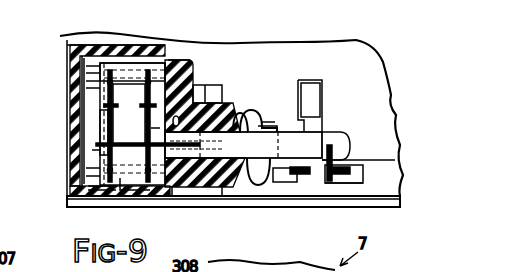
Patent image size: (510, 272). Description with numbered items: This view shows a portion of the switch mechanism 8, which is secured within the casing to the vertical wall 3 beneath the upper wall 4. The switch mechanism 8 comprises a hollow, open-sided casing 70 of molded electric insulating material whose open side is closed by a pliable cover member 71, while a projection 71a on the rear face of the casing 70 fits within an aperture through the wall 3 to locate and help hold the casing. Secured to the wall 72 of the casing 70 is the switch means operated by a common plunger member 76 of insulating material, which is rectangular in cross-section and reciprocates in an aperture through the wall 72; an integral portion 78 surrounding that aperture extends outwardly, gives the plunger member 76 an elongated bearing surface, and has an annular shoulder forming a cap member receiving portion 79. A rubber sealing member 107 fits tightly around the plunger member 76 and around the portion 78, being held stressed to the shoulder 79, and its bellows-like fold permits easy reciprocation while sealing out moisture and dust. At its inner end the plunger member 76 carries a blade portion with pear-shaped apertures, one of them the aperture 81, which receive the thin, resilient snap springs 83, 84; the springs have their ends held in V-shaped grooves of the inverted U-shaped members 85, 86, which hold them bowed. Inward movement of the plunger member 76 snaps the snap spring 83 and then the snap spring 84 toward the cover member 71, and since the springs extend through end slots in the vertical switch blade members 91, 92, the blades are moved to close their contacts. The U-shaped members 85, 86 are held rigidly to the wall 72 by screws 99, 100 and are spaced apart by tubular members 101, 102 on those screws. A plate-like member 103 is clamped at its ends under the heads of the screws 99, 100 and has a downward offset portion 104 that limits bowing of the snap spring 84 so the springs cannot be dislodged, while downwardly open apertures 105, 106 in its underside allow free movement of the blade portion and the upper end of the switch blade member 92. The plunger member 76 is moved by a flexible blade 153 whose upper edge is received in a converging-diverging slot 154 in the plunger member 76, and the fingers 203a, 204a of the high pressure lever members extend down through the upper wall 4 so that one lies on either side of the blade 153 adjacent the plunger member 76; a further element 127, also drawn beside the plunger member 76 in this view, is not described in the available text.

The vertical wall 3 is at (281, 207).
The upper wall 4 is at (336, 50).
The switch mechanism 8 is at (189, 52).
The casing 70 is at (172, 198).
The cover member 71 is at (133, 46).
The projection 71a is at (182, 205).
The wall 72 is at (193, 66).
The plunger member 76 is at (345, 140).
The portion 78 is at (205, 101).
The cap member receiving portion 79 is at (230, 117).
The pear-shaped aperture 81 is at (176, 121).
The snap spring 83 is at (151, 130).
The snap spring 84 is at (96, 144).
The U-shaped member 85 is at (141, 195).
The U-shaped member 86 is at (78, 197).
The switch blade member 91 is at (129, 114).
The switch blade member 92 is at (103, 107).
The screw 99 is at (88, 72).
The screw 100 is at (86, 170).
The tubular member 101 is at (124, 72).
The tubular member 102 is at (115, 192).
The plate-like member 103 is at (95, 90).
The offset portion 104 is at (98, 126).
The aperture 105 is at (99, 152).
The aperture 106 is at (99, 115).
The sealing member 107 is at (258, 124).
The bracket 127 is at (315, 94).
The flexible blade 153 is at (363, 178).
The slot 154 is at (325, 146).
The finger 203a is at (358, 165).
The finger 204a is at (243, 163).